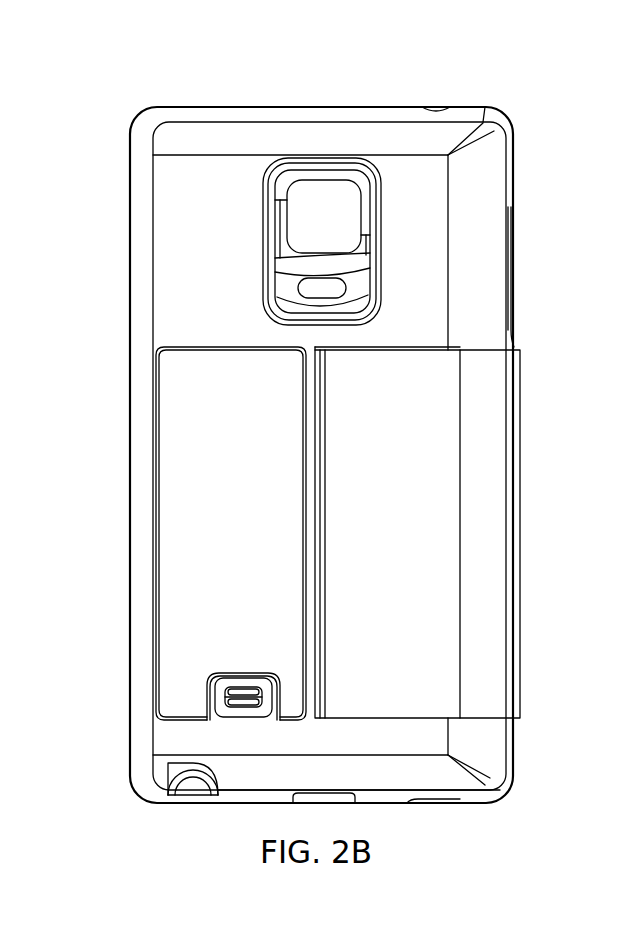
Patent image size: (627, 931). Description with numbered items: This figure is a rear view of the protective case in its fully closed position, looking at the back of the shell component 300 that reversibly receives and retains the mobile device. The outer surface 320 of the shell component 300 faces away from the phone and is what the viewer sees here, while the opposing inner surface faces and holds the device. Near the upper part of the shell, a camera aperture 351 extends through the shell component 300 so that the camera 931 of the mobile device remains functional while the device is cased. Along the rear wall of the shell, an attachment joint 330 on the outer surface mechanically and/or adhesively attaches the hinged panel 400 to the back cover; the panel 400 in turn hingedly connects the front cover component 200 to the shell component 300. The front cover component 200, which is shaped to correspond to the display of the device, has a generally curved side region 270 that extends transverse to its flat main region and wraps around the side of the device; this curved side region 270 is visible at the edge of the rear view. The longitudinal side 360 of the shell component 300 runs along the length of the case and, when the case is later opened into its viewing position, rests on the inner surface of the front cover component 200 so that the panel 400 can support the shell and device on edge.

The front cover component 200 is at (256, 466).
The curved side region 270 is at (0, 472).
The shell component 300 is at (186, 298).
The outer surface 320 is at (487, 267).
The attachment joint 330 is at (326, 627).
The camera aperture 351 is at (352, 161).
The longitudinal side 360 is at (130, 660).
The panel 400 is at (520, 475).
The camera 931 is at (312, 204).